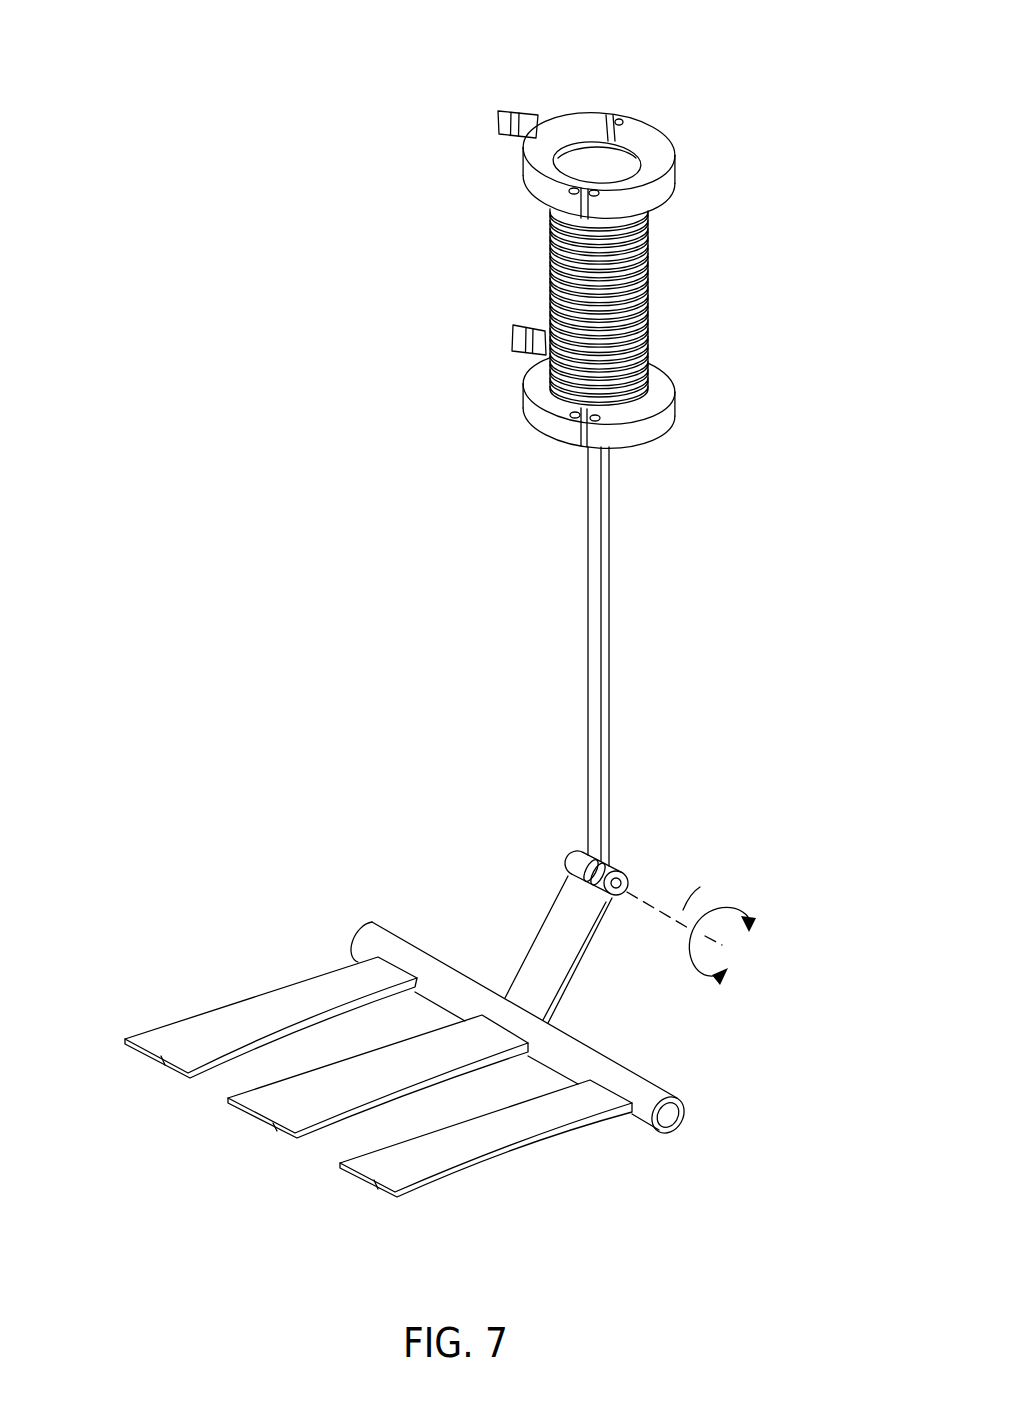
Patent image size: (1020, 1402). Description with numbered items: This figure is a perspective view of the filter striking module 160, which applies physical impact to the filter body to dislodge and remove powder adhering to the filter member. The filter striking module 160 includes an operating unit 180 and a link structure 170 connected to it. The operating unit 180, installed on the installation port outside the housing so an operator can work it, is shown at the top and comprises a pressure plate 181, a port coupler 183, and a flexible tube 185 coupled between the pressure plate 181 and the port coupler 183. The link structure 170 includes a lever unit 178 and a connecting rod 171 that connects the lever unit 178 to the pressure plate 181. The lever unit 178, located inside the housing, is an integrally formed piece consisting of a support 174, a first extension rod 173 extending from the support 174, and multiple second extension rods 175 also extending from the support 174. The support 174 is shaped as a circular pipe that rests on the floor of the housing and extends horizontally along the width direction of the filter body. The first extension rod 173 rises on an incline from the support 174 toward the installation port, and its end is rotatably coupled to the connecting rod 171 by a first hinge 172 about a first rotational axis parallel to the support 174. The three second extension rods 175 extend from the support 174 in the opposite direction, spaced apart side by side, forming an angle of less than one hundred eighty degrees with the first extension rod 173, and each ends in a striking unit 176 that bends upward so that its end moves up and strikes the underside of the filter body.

The filter striking module 160 is at (372, 315).
The link structure 170 is at (522, 624).
The connecting rod 171 is at (609, 633).
The first hinge 172 is at (625, 873).
The first extension rod 173 is at (542, 935).
The support 174 is at (680, 1130).
The second extension rods 175 is at (325, 1087).
The striking unit 176 is at (376, 1185).
The lever unit 178 is at (331, 834).
The operating unit 180 is at (679, 266).
The pressure plate 181 is at (592, 156).
The port coupler 183 is at (655, 424).
The flexible tube 185 is at (550, 273).